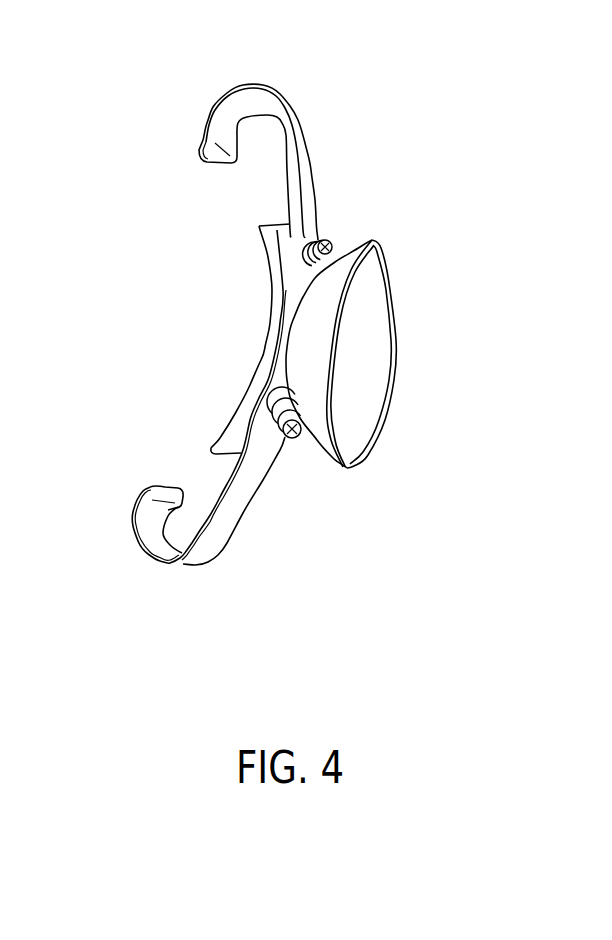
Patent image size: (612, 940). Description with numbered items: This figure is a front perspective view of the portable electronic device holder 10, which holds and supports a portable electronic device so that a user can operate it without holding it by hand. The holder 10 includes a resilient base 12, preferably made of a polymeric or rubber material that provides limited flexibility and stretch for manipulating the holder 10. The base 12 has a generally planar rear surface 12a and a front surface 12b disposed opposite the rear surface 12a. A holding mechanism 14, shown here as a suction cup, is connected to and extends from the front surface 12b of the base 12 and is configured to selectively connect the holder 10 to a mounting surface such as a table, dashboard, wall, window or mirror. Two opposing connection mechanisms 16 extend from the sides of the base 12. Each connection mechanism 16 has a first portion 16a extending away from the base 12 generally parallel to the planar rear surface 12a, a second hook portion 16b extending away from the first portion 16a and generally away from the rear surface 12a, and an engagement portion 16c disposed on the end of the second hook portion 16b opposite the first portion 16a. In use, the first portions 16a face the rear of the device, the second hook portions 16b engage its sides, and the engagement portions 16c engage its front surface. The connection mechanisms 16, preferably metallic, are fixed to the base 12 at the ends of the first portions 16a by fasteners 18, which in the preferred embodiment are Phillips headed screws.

The portable electronic device holder 10 is at (138, 217).
The resilient base 12 is at (270, 345).
The rear surface 12a is at (270, 302).
The front surface 12b is at (282, 376).
The holding mechanism 14 is at (364, 258).
The connection mechanism 16 is at (322, 93).
The first portion 16a is at (306, 168).
The second hook portion 16b is at (243, 89).
The engagement portion 16c is at (217, 132).
The fastener 18 is at (318, 252).